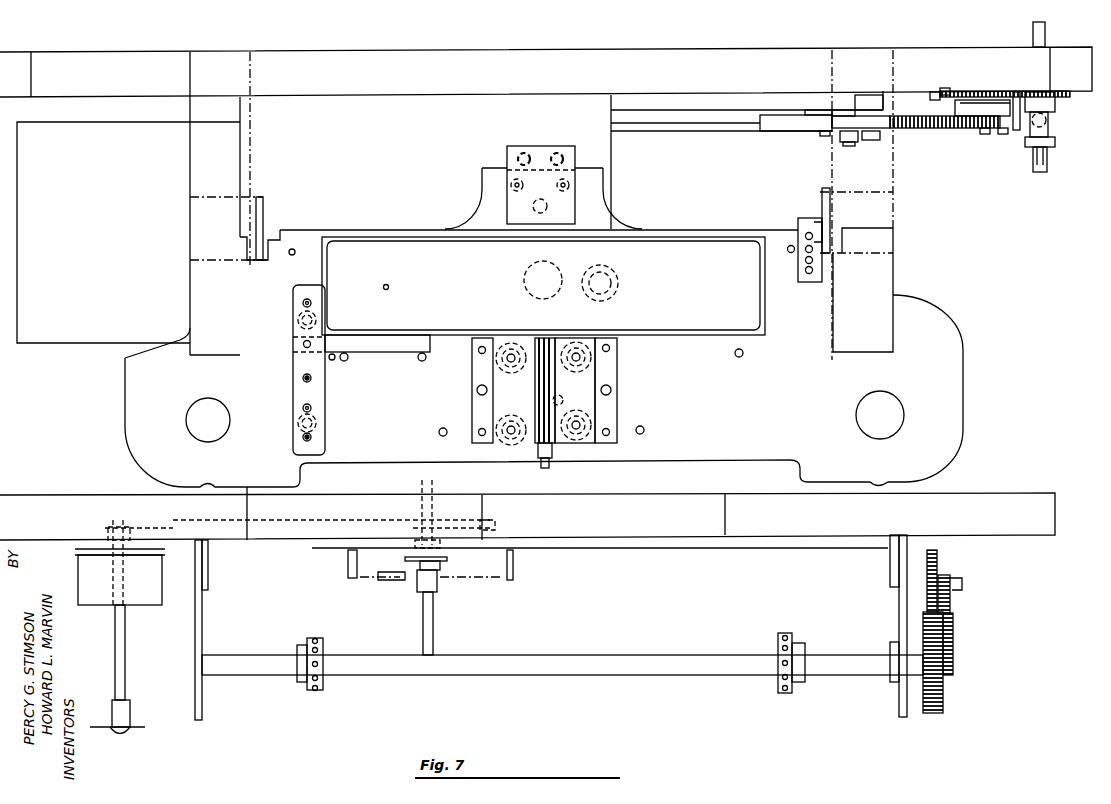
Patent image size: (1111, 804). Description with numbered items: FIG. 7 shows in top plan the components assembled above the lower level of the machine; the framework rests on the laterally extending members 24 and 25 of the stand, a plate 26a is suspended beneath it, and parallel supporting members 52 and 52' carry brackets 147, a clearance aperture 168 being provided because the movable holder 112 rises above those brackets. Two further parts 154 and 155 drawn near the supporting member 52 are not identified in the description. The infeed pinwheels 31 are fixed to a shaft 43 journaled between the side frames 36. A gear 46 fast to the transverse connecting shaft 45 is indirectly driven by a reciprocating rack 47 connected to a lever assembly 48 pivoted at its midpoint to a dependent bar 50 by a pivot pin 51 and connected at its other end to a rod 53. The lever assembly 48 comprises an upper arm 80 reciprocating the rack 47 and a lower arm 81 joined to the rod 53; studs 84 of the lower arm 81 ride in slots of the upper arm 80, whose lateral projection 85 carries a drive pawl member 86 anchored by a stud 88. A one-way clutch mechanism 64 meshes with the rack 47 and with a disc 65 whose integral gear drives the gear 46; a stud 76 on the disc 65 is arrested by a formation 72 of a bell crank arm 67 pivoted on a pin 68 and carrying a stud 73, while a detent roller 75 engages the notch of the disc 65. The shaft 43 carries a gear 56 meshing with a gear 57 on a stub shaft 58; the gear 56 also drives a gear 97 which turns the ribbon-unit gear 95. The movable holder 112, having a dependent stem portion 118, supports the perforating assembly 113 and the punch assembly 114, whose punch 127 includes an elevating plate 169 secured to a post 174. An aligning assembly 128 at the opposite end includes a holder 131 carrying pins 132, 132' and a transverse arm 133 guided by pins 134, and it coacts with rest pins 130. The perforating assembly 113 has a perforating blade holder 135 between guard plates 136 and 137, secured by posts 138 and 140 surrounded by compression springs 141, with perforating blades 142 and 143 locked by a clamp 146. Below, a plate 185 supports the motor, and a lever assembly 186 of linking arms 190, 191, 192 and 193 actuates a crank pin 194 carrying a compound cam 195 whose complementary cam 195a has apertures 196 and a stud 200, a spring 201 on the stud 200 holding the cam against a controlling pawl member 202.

The laterally extending member 24 is at (376, 96).
The laterally extending member 25 is at (1010, 494).
The plate 26a is at (612, 160).
The infeed pinwheel feeding device 31 is at (323, 680).
The side frame 36 is at (203, 712).
The infeed pinwheel shaft 43 is at (660, 665).
The transverse connecting shaft 45 is at (1047, 165).
The driving gear 46 is at (1070, 95).
The reciprocating rack 47 is at (931, 128).
The lever assembly 48 is at (797, 144).
The dependent bar 50 is at (853, 100).
The pivot pin 51 is at (850, 146).
The supporting member 52 is at (863, 306).
The supporting member 52' is at (209, 219).
The rod 53 is at (700, 118).
The gear 56 is at (930, 715).
The gear 57 is at (934, 555).
The stub shaft 58 is at (955, 580).
The one way clutch mechanism 64 is at (955, 78).
The disc 65 is at (946, 91).
The bell crank arm 67 is at (958, 106).
The pin 68 is at (1001, 134).
The formation 72 is at (974, 100).
The stud 73 is at (1050, 95).
The detent roller 75 is at (940, 96).
The stud 76 is at (1015, 98).
The upper arm 80 is at (845, 120).
The lower arm 81 is at (812, 112).
The stud 84 is at (820, 136).
The lateral projection 85 is at (740, 122).
The drive pawl member 86 is at (780, 120).
The stud 88 is at (880, 136).
The gear 95 is at (952, 645).
The gear 97 is at (950, 605).
The movable holder 112 is at (963, 400).
The perforating assembly 113 is at (626, 409).
The punch assembly 114 is at (759, 336).
The dependent stem portion 118 is at (522, 280).
The punch 127 is at (728, 335).
The aligning assembly 128 is at (297, 440).
The rest pin 130 is at (294, 249).
The holder 131 is at (300, 414).
The pin 132 is at (308, 359).
The pin 132' is at (276, 391).
The transverse arm 133 is at (383, 348).
The pin 134 is at (335, 360).
The perforating blade holder 135 is at (597, 388).
The guard plate 136 is at (472, 405).
The guard plate 137 is at (616, 398).
The post 138 is at (508, 427).
The post 140 is at (614, 425).
The compression spring 141 is at (500, 441).
The perforating blade 142 is at (512, 345).
The perforating blade 143 is at (549, 345).
The clamp 146 is at (552, 460).
The bracket 147 is at (822, 192).
The plate 154 is at (810, 283).
The clip 155 is at (818, 218).
The clearance aperture 168 is at (840, 257).
The elevating plate 169 is at (762, 320).
The post 174 is at (607, 283).
The supporting plate 185 is at (46, 333).
The lever assembly 186 is at (107, 522).
The linking arm 190 is at (140, 740).
The linking arm 191 is at (135, 527).
The linking arm 192 is at (237, 520).
The linking arm 193 is at (495, 527).
The crank pin 194 is at (430, 490).
The cam 195 is at (447, 560).
The complementary cam 195a is at (448, 572).
The apertures 196 is at (433, 600).
The projecting stud 200 is at (442, 585).
The spring 201 is at (505, 580).
The controlling pawl member 202 is at (375, 580).